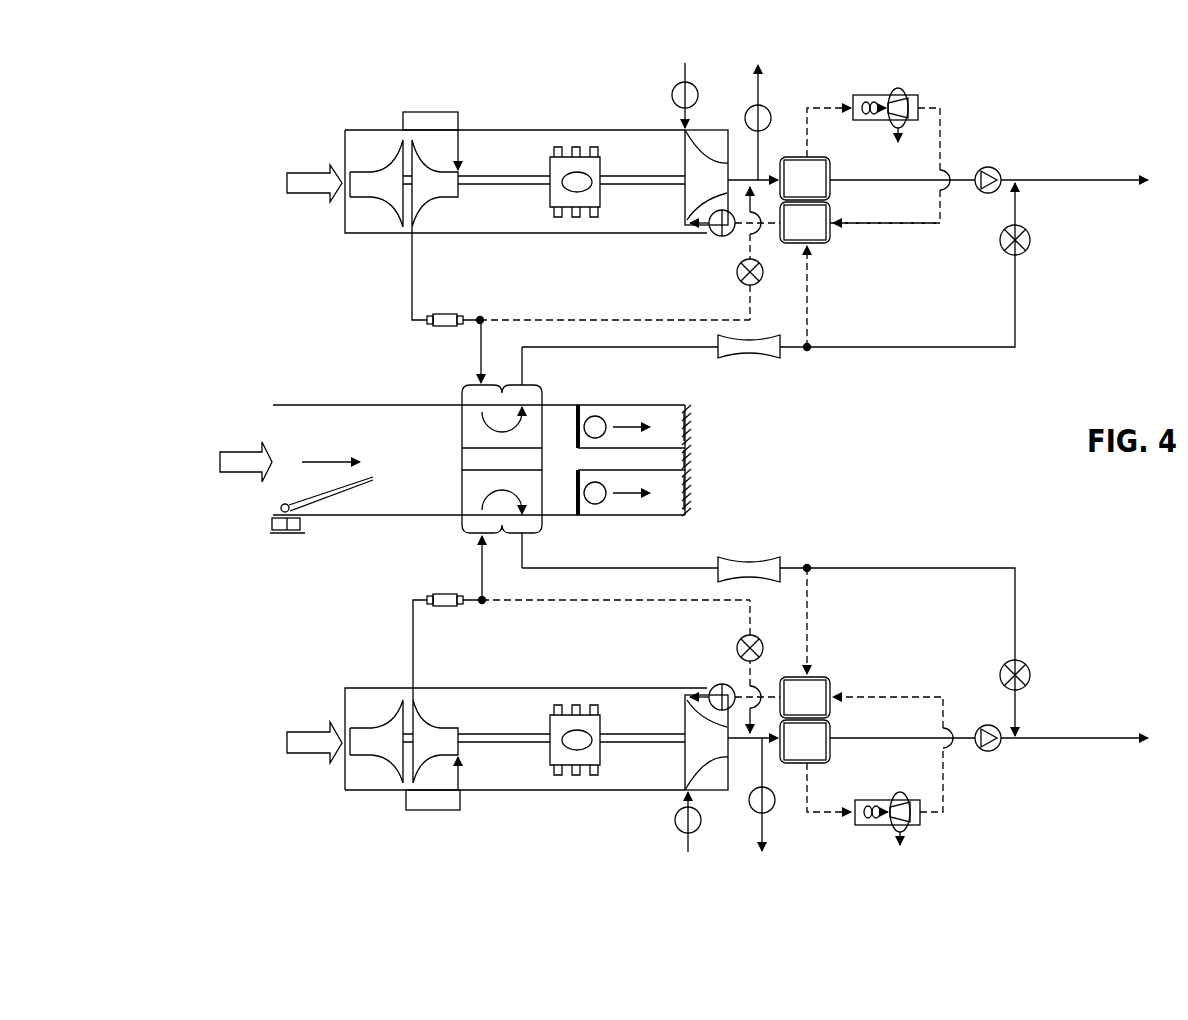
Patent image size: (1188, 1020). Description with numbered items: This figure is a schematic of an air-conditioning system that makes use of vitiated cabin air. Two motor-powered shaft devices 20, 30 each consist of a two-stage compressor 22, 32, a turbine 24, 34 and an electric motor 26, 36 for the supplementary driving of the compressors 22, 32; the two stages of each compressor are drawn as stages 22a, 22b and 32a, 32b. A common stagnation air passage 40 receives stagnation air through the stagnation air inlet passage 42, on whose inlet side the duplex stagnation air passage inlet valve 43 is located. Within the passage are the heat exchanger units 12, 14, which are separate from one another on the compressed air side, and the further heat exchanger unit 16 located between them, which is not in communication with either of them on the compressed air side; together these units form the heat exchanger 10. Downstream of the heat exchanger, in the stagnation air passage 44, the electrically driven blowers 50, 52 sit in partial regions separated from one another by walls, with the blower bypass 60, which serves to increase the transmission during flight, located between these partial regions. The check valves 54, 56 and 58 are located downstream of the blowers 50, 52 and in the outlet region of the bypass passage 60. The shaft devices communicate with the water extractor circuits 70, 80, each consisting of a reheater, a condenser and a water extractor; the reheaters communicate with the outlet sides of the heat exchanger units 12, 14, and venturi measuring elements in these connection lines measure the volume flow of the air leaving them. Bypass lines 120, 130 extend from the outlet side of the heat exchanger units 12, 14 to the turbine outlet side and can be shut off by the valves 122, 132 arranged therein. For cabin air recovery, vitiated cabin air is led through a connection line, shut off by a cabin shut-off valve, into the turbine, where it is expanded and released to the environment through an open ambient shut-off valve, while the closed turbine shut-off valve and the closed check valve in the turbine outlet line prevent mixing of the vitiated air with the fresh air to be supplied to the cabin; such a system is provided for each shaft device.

The heat exchanger 10 is at (547, 410).
The heat exchanger unit 12 is at (462, 428).
The heat exchanger unit 14 is at (462, 500).
The further heat exchanger unit 16 is at (544, 463).
The motor-powered shaft device 20 is at (622, 204).
The two-stage compressor 22 is at (377, 158).
The first compressor stage C1 22a is at (368, 196).
The second compressor stage C2 22b is at (433, 196).
The turbine 24 is at (707, 157).
The electric motor 26 is at (552, 167).
The motor-powered shaft device 30 is at (624, 716).
The two-stage compressor 32 is at (366, 769).
The first compressor stage C1 32a is at (373, 728).
The second compressor stage C2 32b is at (432, 728).
The turbine 34 is at (709, 766).
The electric motor 36 is at (552, 758).
The common stagnation air passage 40 is at (268, 421).
The stagnation air inlet passage 42 is at (342, 418).
The stagnation air passage inlet valve 43 is at (348, 490).
The stagnation air passage 44 is at (556, 503).
The blower 50 is at (585, 403).
The blower 52 is at (582, 503).
The check valve 54 is at (687, 429).
The check valve 56 is at (687, 495).
The check valve 58 is at (680, 447).
The blower bypass 60 is at (687, 403).
The water extractor circuit 70 is at (954, 121).
The water extractor circuit 80 is at (845, 671).
The bypass line 120 is at (1017, 333).
The valve 122 is at (1022, 252).
The bypass line 130 is at (1017, 580).
The valve 132 is at (1025, 665).